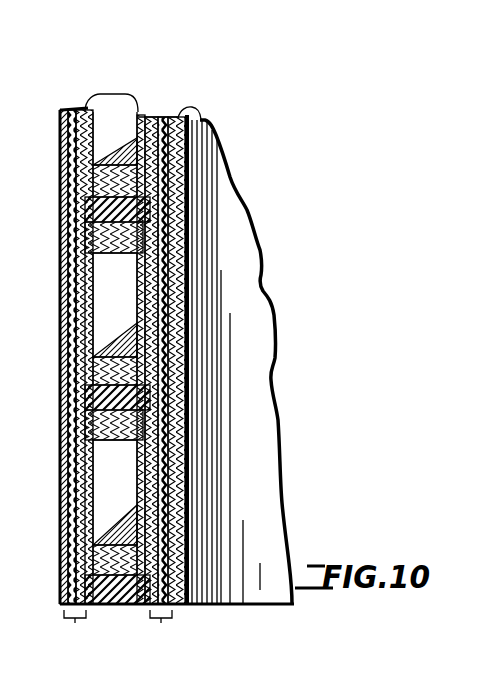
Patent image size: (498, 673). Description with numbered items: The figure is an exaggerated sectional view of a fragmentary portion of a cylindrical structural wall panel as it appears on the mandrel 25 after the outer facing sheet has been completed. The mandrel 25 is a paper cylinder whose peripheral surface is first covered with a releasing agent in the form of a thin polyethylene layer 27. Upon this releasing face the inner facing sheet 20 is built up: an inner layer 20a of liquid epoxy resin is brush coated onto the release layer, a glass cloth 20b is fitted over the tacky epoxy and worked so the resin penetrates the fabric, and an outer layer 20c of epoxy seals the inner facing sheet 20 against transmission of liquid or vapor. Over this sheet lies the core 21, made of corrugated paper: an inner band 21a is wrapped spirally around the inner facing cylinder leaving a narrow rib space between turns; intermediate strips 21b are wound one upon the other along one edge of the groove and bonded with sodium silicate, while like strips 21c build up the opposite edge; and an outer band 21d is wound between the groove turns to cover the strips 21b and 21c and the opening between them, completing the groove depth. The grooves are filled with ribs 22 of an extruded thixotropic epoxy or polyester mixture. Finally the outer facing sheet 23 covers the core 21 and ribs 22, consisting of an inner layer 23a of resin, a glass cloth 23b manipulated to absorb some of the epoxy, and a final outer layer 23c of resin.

The inner cylindrical facing sheet 20 is at (224, 43).
The inner layer 20a is at (163, 117).
The glass cloth 20b is at (155, 117).
The outer layer 20c is at (147, 117).
The core 21 is at (110, 93).
The inner band 21a is at (133, 290).
The intermediate strip 21b is at (118, 147).
The strip 21c is at (111, 257).
The outer band 21d is at (100, 478).
The rib 22 is at (90, 214).
The outer facing sheet 23 is at (76, 628).
The inner layer 23a is at (72, 110).
The glass cloth 23b is at (67, 110).
The final outer layer 23c is at (62, 110).
The mandrel 25 is at (189, 606).
The layer of polyethylene 27 is at (190, 109).